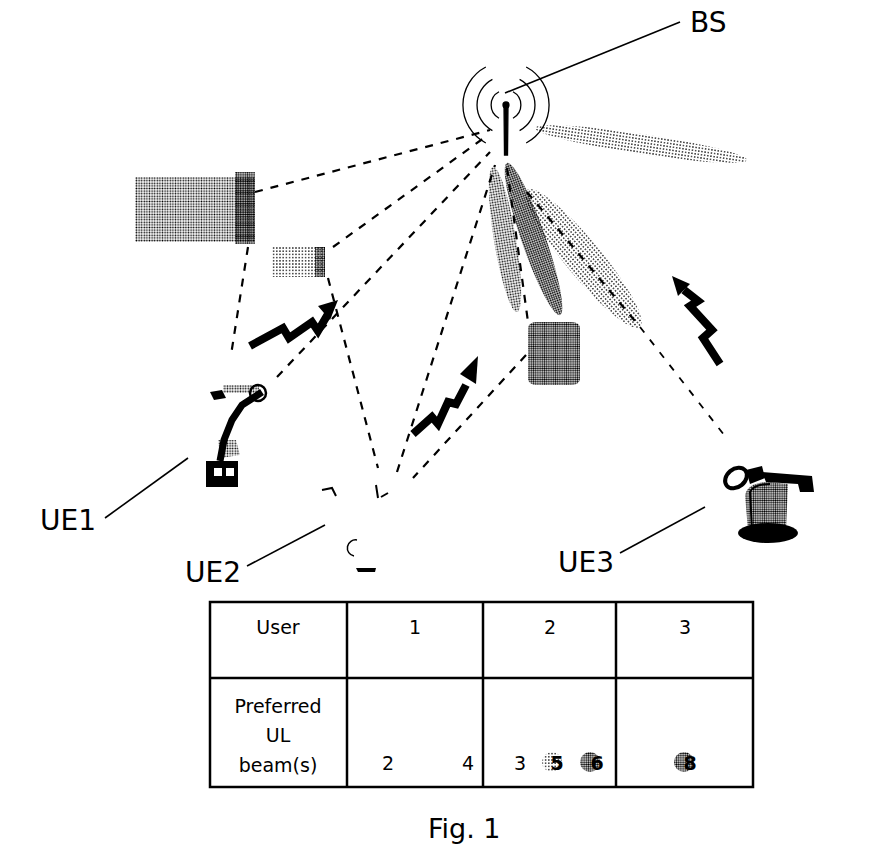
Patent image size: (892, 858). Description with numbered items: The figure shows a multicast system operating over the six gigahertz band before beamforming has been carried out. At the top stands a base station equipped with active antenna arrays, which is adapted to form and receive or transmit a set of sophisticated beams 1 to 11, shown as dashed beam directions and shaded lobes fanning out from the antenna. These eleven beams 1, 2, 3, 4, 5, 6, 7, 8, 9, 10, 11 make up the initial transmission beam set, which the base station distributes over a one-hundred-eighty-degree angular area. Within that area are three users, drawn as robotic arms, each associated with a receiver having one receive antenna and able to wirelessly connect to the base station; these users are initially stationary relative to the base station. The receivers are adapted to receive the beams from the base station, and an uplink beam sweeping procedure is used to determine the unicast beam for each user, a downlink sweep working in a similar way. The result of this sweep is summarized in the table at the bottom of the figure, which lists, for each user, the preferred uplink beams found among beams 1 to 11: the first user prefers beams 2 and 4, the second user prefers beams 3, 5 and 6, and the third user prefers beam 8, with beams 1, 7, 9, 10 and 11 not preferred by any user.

The beam 1 is at (372, 136).
The beam 2 is at (410, 191).
The beam 3 is at (383, 264).
The beam 4 is at (435, 318).
The beam 5 is at (487, 254).
The beam 6 is at (505, 240).
The beam 7 is at (534, 239).
The beam 8 is at (583, 259).
The beam 9 is at (683, 329).
The beam 10 is at (717, 211).
The beam 11 is at (641, 137).